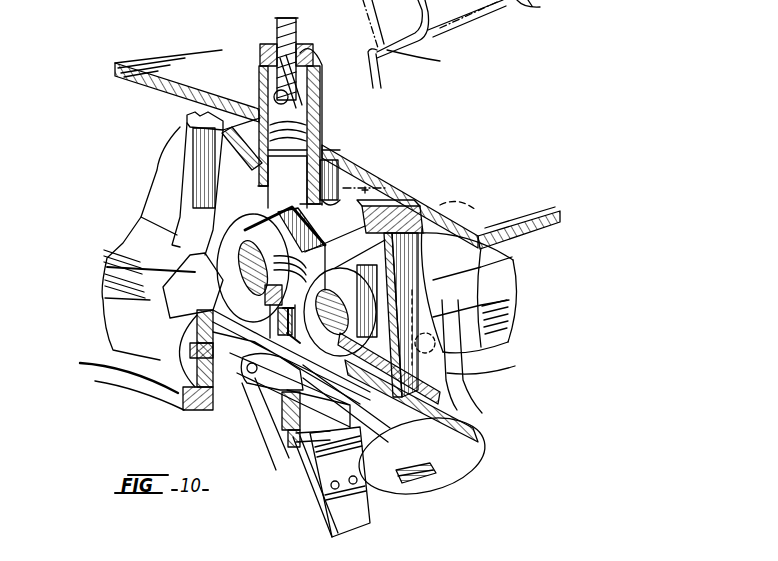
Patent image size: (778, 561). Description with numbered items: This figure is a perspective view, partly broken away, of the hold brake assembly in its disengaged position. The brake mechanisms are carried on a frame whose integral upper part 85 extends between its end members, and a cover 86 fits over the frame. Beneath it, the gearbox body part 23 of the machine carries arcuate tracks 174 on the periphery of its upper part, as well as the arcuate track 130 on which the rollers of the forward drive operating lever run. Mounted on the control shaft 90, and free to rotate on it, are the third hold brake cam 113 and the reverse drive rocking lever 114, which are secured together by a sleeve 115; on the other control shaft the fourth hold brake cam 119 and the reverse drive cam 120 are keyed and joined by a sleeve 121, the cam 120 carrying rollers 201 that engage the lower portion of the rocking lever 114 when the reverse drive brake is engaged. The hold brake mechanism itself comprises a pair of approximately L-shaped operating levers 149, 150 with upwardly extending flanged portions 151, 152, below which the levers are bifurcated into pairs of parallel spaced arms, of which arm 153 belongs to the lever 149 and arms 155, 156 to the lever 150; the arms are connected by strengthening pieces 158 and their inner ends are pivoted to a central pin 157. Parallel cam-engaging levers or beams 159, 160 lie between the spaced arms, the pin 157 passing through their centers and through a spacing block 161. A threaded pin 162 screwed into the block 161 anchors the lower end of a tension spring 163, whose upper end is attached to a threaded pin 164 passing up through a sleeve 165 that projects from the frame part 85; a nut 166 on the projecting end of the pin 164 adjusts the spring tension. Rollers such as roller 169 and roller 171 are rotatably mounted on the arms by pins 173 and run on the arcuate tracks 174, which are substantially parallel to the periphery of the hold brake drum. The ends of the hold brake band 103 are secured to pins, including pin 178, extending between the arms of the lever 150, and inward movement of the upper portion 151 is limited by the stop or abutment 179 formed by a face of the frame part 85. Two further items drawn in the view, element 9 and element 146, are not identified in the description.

The bearing ring 9 is at (330, 310).
The gearbox body part 23 is at (428, 57).
The upper part of the frame 85 is at (396, 184).
The cover 86 is at (170, 63).
The control shaft 90 is at (217, 247).
The hold brake band 103 is at (338, 508).
The third hold brake cam 113 is at (243, 225).
The reverse drive rocking lever 114 is at (370, 195).
The sleeve 115 is at (345, 212).
The fourth hold brake cam 119 is at (363, 404).
The reverse drive cam 120 is at (502, 287).
The sleeve 121 is at (512, 258).
The arcuate track 130 is at (430, 18).
The frame 146 is at (545, 8).
The hold brake operating lever 149 is at (139, 195).
The hold brake operating lever 150 is at (128, 270).
The upwardly extending flanged portion 151 is at (162, 178).
The upwardly extending flanged portion 152 is at (509, 301).
The arm 153 is at (118, 291).
The arm 155 is at (282, 440).
The arm 156 is at (482, 437).
The central pin 157 is at (200, 373).
The strengthening piece 158 is at (447, 459).
The cam-engaging lever 159 is at (362, 420).
The cam-engaging lever 160 is at (465, 416).
The spacing block 161 is at (250, 378).
The threaded pin 162 is at (480, 374).
The tension spring 163 is at (280, 113).
The threaded pin 164 is at (277, 23).
The sleeve 165 is at (260, 69).
The nut 166 is at (275, 43).
The roller 169 is at (178, 326).
The roller 171 is at (280, 455).
The pin 173 is at (190, 344).
The arcuate track 174 is at (181, 394).
The pin 178 is at (293, 462).
The stop 179 is at (190, 140).
The roller 201 is at (457, 357).